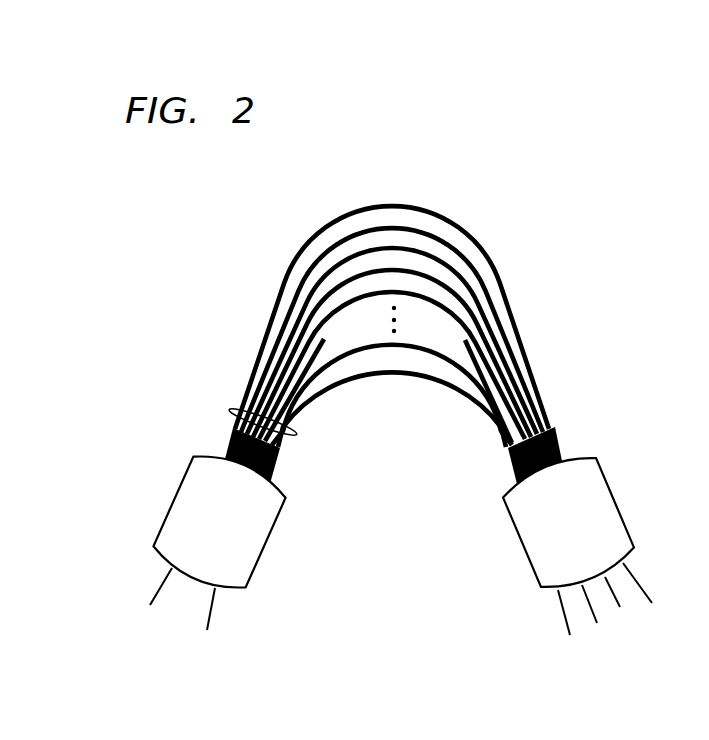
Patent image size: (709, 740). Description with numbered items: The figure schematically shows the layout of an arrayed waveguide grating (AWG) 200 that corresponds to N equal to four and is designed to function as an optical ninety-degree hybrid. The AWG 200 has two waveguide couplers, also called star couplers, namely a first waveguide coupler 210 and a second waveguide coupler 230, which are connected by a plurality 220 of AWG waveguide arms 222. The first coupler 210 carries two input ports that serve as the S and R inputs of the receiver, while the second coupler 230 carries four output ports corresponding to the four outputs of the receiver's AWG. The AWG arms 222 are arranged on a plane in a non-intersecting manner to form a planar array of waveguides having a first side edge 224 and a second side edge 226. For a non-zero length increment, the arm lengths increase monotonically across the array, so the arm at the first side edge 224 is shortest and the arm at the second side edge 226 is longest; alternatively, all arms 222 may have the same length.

The arrayed waveguide grating 200 is at (209, 174).
The waveguide coupler 210 is at (176, 500).
The plurality of AWG waveguide arms 220 is at (238, 415).
The AWG waveguide arm 222 is at (397, 205).
The first side edge 224 is at (447, 390).
The second side edge 226 is at (524, 311).
The waveguide coupler 230 is at (614, 500).